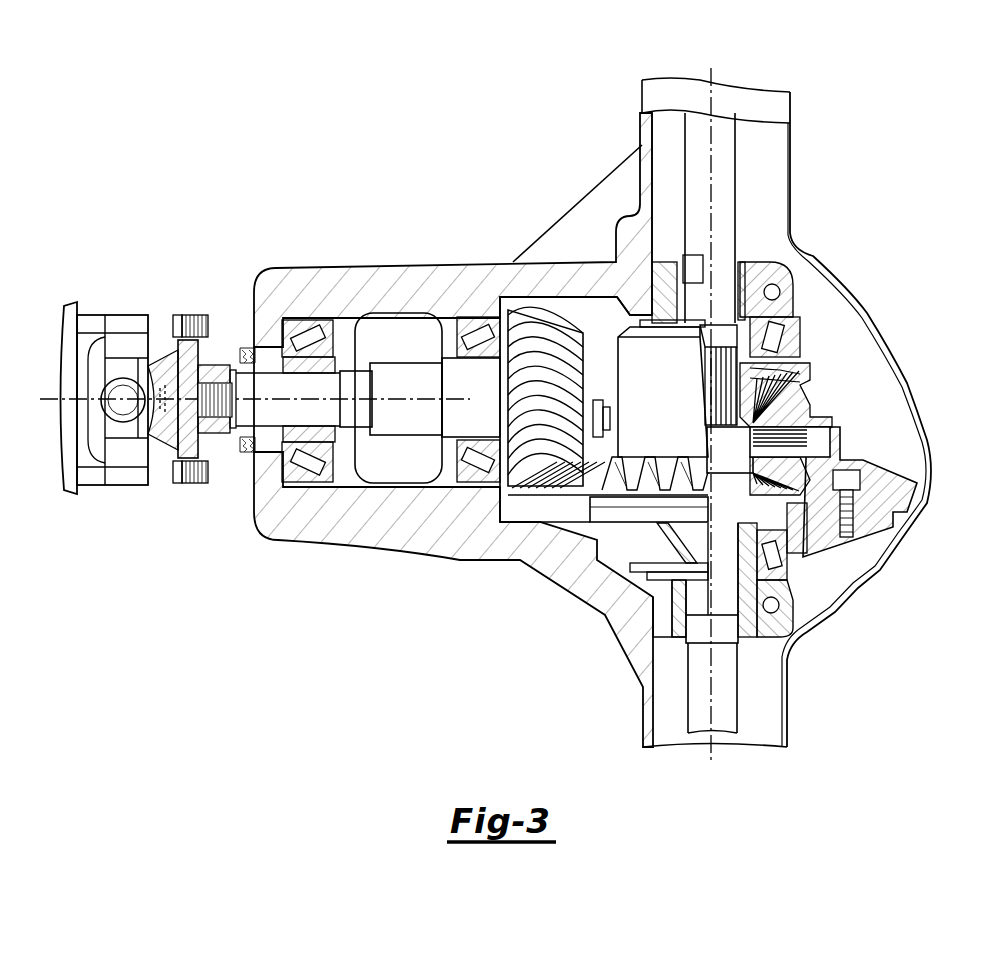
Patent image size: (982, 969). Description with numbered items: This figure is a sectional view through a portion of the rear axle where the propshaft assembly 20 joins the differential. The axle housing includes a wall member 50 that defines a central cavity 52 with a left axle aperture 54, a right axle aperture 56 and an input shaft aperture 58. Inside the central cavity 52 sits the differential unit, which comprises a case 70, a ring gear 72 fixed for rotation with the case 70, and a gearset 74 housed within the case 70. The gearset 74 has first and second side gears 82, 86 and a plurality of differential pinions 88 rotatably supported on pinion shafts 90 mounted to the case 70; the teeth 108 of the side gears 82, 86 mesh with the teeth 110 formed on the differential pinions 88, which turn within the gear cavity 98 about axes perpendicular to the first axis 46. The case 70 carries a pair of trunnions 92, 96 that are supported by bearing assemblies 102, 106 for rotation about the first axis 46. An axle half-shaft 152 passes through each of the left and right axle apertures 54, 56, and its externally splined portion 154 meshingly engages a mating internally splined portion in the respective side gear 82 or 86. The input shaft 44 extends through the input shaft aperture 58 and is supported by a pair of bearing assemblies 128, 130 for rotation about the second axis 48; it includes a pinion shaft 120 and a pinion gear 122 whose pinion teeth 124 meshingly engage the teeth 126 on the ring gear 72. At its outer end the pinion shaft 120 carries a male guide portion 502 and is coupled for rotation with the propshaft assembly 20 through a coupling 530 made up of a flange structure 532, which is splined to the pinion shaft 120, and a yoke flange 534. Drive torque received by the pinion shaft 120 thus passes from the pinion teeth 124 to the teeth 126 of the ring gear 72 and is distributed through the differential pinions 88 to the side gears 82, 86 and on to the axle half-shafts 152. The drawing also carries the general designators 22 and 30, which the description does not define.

The propshaft assembly 20 is at (72, 323).
The axle assembly 22 is at (418, 145).
The differential assembly 30 is at (848, 222).
The input shaft 44 is at (357, 410).
The first axis 46 is at (711, 70).
The second axis 48 is at (384, 402).
The wall member 50 is at (514, 275).
The central cavity 52 is at (888, 428).
The left axle aperture 54 is at (770, 690).
The right axle aperture 56 is at (768, 185).
The input shaft aperture 58 is at (384, 318).
The case 70 is at (692, 350).
The ring gear 72 is at (575, 490).
The gearset 74 is at (848, 415).
The first side gear 82 is at (745, 505).
The second side gear 86 is at (790, 378).
The differential pinions 88 is at (790, 410).
The pinion shafts 90 is at (822, 440).
The trunnion 92 is at (795, 560).
The trunnion 96 is at (796, 338).
The gear cavity 98 is at (725, 447).
The bearing assembly 102 is at (787, 565).
The bearing assembly 106 is at (770, 322).
The teeth 108 is at (740, 498).
The teeth 110 is at (797, 540).
The pinion shaft 120 is at (472, 377).
The pinion gear 122 is at (585, 345).
The pinion teeth 124 is at (578, 360).
The teeth 126 is at (630, 450).
The bearing assembly 128 is at (456, 338).
The bearing assembly 130 is at (328, 320).
The axle half-shaft 152 is at (724, 150).
The externally splined portion 154 is at (722, 345).
The male guide portion 502 is at (182, 386).
The coupling 530 is at (188, 466).
The flange structure 532 is at (206, 436).
The yoke flange 534 is at (186, 488).